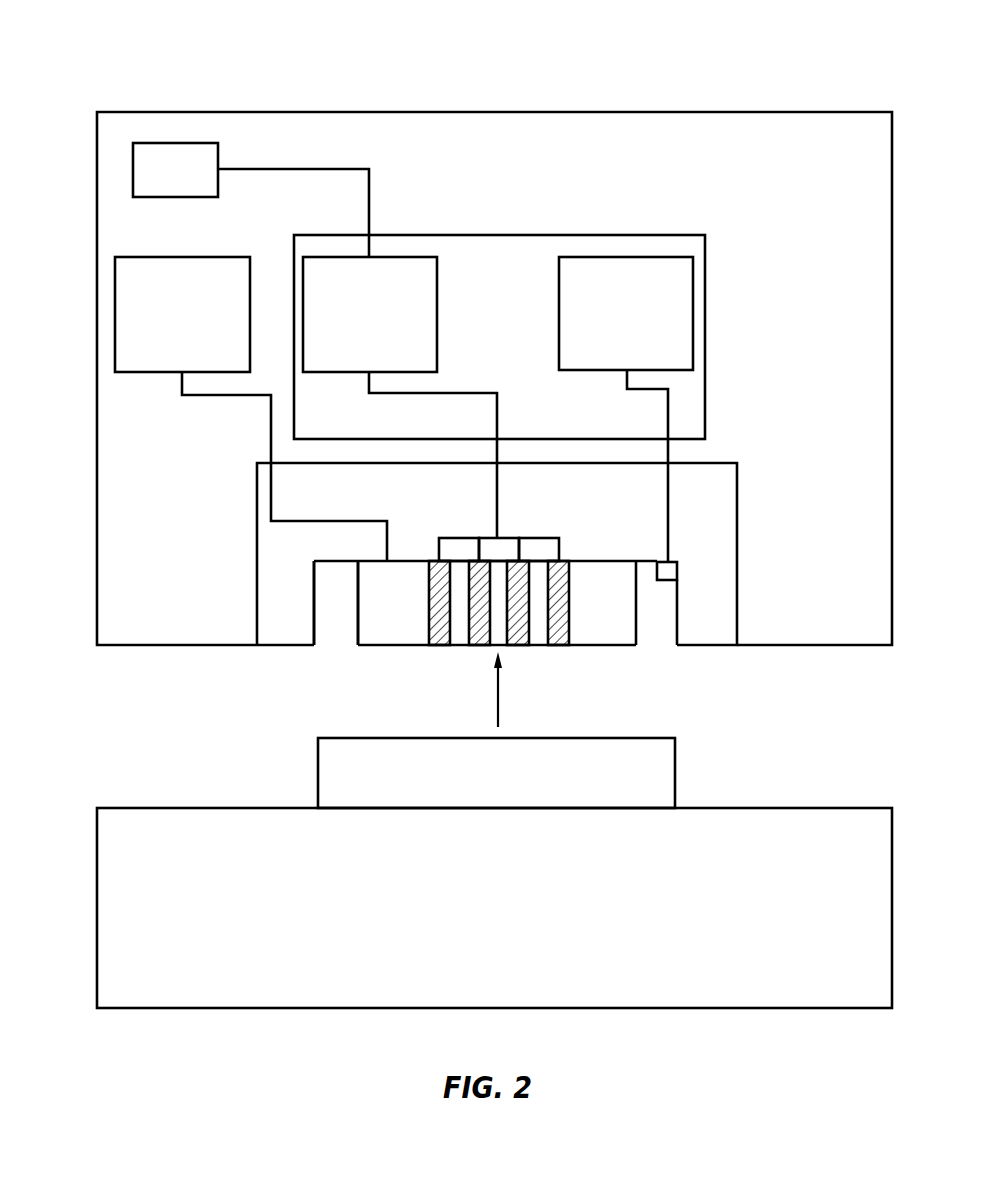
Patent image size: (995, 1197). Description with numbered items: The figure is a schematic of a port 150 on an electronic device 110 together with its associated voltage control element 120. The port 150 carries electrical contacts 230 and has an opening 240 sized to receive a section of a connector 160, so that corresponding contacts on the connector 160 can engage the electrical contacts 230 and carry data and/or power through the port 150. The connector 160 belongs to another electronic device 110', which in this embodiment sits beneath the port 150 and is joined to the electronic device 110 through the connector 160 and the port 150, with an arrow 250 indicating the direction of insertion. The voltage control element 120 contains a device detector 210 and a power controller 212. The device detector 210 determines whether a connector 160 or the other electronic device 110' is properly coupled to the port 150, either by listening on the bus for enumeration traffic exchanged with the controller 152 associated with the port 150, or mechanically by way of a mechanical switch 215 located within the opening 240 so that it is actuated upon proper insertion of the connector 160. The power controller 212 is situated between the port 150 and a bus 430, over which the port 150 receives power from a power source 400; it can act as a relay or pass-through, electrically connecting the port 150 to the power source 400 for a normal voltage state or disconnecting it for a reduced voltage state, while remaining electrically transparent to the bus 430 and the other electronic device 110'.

The electronic device 110 is at (494, 332).
The another electronic device 110' is at (502, 853).
The voltage control element 120 is at (671, 226).
The port 150 is at (640, 655).
The controller 152 is at (251, 409).
The connector 160 is at (643, 767).
The device detector 210 is at (626, 409).
The power controller 212 is at (400, 397).
The mechanical switch 215 is at (665, 572).
The electrical contacts 230 is at (478, 641).
The opening 240 is at (333, 637).
The flow direction arrow 250 is at (498, 692).
The power source 400 is at (175, 170).
The bus 430 is at (371, 198).